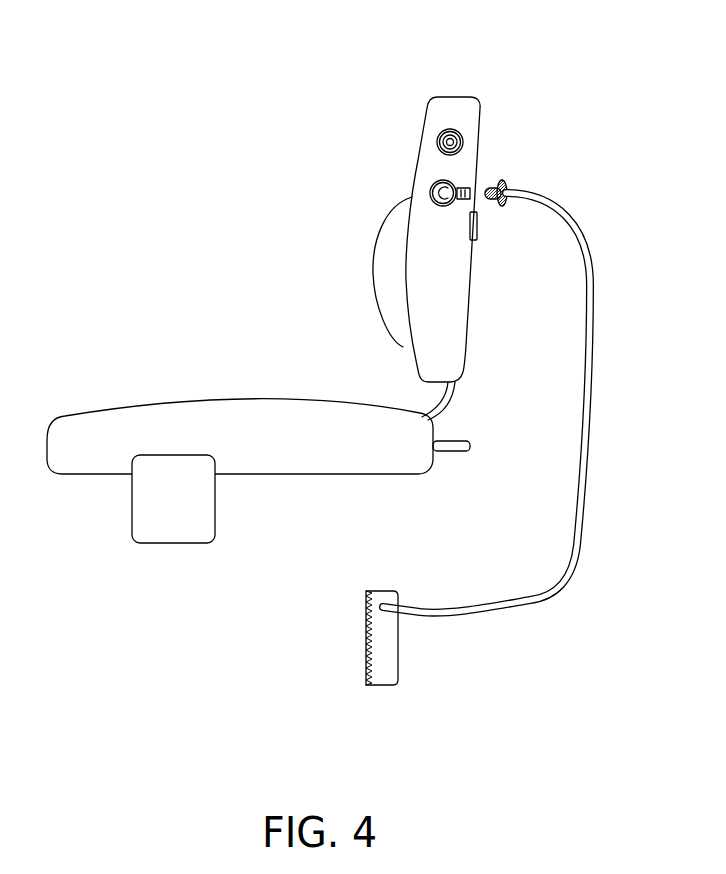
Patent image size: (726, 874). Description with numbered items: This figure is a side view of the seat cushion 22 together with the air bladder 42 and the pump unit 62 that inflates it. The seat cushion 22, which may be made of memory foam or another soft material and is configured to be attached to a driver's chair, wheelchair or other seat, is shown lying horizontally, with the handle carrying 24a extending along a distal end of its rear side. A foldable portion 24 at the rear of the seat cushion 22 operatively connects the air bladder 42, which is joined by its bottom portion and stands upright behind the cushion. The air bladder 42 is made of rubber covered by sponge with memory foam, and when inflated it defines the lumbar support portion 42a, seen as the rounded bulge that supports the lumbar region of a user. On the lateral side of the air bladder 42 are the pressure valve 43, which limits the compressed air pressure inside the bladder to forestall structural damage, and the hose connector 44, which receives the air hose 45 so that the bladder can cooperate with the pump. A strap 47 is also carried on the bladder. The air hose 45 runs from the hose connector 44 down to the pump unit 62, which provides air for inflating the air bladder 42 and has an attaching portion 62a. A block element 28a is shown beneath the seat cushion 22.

The seat cushion 22 is at (245, 400).
The foldable portion 24 is at (452, 393).
The handle carrying 24a is at (472, 446).
The battery/box on handle 28a is at (130, 490).
The air bladder 42 is at (455, 97).
The lumbar support portion 42a is at (372, 256).
The pressure valve 43 is at (462, 140).
The hose connector 44 is at (459, 188).
The air hose 45 is at (521, 188).
The strap 47 is at (478, 225).
The pump unit 62 is at (398, 643).
The attaching portion 62a is at (366, 637).